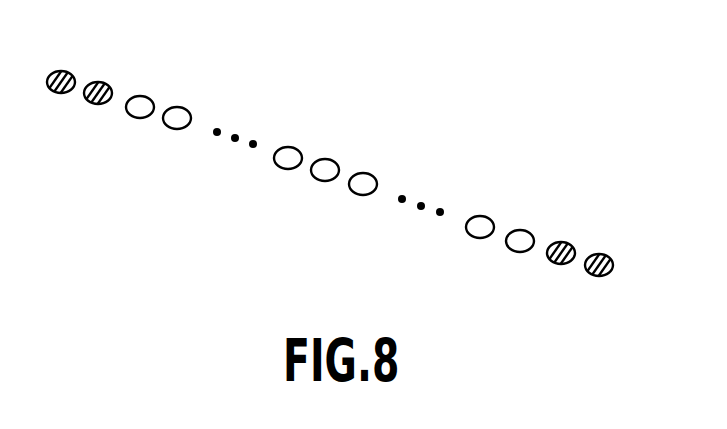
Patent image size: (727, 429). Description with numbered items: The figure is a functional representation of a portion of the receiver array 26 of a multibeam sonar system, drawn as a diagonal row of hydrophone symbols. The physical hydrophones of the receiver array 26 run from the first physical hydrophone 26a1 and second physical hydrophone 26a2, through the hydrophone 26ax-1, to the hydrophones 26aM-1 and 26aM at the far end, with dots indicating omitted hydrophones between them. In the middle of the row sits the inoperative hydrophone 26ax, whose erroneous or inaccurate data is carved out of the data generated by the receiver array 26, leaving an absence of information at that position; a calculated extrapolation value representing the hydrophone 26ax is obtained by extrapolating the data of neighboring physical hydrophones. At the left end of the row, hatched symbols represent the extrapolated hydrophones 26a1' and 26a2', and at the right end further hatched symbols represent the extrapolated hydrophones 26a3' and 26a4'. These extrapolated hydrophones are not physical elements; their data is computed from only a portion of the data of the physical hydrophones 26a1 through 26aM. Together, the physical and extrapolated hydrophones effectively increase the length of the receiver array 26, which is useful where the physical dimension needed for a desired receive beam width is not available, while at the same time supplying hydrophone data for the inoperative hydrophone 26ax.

The receiver array 26 is at (348, 108).
The extrapolated hydrophone 26a1' is at (72, 53).
The extrapolated hydrophone 26a2' is at (137, 70).
The physical hydrophone 26a1 is at (108, 134).
The physical hydrophone 26a2 is at (209, 98).
The physical hydrophone 26ax-1 is at (322, 128).
The inoperative hydrophone 26ax is at (310, 204).
The physical hydrophone 26aM-1 is at (514, 198).
The physical hydrophone 26aM is at (513, 280).
The extrapolated hydrophone 26a3' is at (585, 235).
The extrapolated hydrophone 26a4' is at (607, 300).